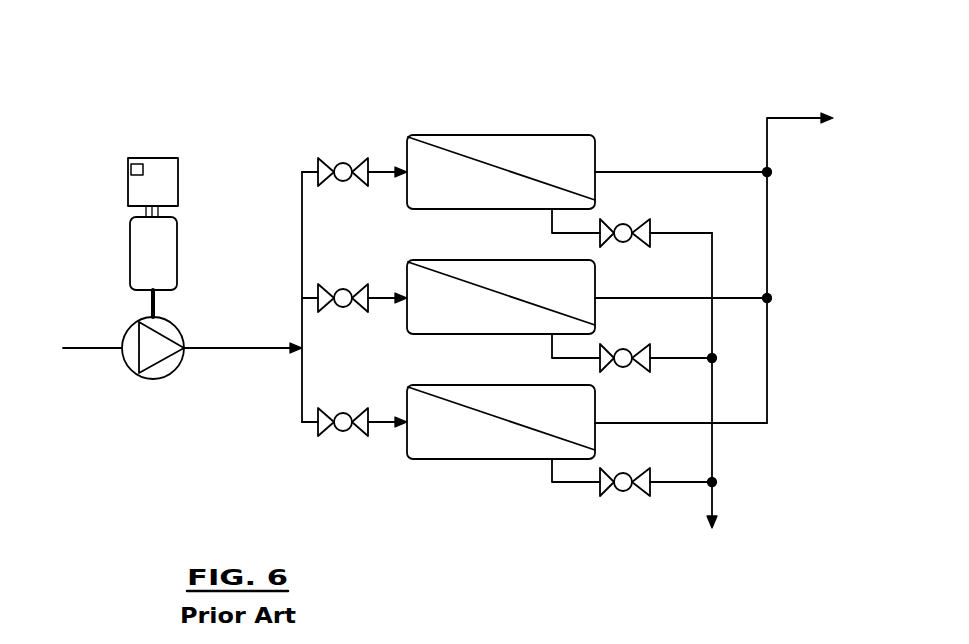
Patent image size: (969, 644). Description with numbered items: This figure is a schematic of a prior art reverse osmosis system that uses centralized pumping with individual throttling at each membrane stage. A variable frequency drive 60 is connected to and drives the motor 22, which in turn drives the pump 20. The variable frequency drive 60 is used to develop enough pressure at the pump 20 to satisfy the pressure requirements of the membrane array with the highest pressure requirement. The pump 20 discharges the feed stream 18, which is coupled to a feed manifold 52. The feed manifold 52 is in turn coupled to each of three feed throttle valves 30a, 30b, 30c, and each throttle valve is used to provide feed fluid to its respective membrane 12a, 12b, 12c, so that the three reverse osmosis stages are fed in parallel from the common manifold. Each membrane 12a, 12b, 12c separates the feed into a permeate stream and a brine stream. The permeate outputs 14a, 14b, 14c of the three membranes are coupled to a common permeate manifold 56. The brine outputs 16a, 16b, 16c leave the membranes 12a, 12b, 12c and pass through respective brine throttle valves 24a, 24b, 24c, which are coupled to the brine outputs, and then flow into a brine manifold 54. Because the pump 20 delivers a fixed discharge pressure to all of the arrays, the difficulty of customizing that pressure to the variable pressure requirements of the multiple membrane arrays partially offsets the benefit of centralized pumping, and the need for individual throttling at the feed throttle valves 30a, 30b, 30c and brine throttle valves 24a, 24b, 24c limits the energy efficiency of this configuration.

The membrane 12a is at (488, 135).
The membrane 12b is at (472, 260).
The membrane 12c is at (472, 385).
The permeate outlet line 14a is at (618, 172).
The permeate outlet line 14b is at (618, 298).
The permeate outlet line 14c is at (618, 423).
The brine output 16a is at (552, 222).
The brine output 16b is at (552, 346).
The brine output 16c is at (552, 470).
The feed stream 18 is at (232, 348).
The pump 20 is at (149, 380).
The motor 22 is at (130, 250).
The brine throttle valve 24a is at (630, 220).
The brine throttle valve 24b is at (630, 345).
The brine throttle valve 24c is at (630, 469).
The throttle valve 30a is at (345, 163).
The throttle valve 30b is at (345, 289).
The throttle valve 30c is at (345, 413).
The feed manifold 52 is at (302, 190).
The brine manifold 54 is at (712, 265).
The permeate manifold 56 is at (767, 205).
The variable frequency drive 60 is at (150, 158).